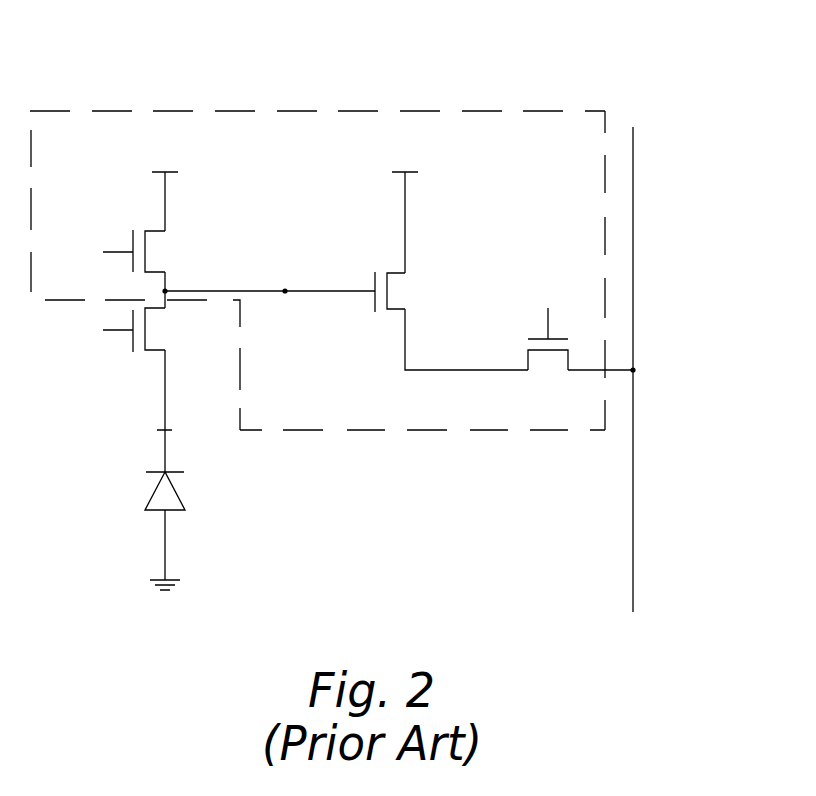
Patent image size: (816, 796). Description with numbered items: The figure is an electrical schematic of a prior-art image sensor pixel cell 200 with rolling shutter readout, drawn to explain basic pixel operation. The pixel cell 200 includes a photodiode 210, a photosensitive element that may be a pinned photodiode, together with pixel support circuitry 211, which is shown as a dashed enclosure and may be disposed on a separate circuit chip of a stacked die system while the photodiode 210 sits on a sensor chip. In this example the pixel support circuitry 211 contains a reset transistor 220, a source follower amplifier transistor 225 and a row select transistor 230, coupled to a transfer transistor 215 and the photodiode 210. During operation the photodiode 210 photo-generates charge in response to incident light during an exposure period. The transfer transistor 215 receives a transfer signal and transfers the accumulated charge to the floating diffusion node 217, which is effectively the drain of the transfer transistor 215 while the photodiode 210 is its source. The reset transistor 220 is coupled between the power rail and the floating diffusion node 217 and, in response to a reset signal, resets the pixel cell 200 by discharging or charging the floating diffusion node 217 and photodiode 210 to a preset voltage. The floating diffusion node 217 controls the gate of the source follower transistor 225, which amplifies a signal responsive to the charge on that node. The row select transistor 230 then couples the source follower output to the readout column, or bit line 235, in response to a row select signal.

The image sensor pixel cell 200 is at (686, 76).
The pixel support circuitry 211 is at (97, 148).
The photodiode 210 is at (136, 492).
The transfer transistor 215 is at (131, 330).
The floating diffusion node 217 is at (287, 294).
The reset transistor 220 is at (128, 251).
The source follower amplifier transistor 225 is at (413, 279).
The row select transistor 230 is at (545, 342).
The bit line 235 is at (634, 525).